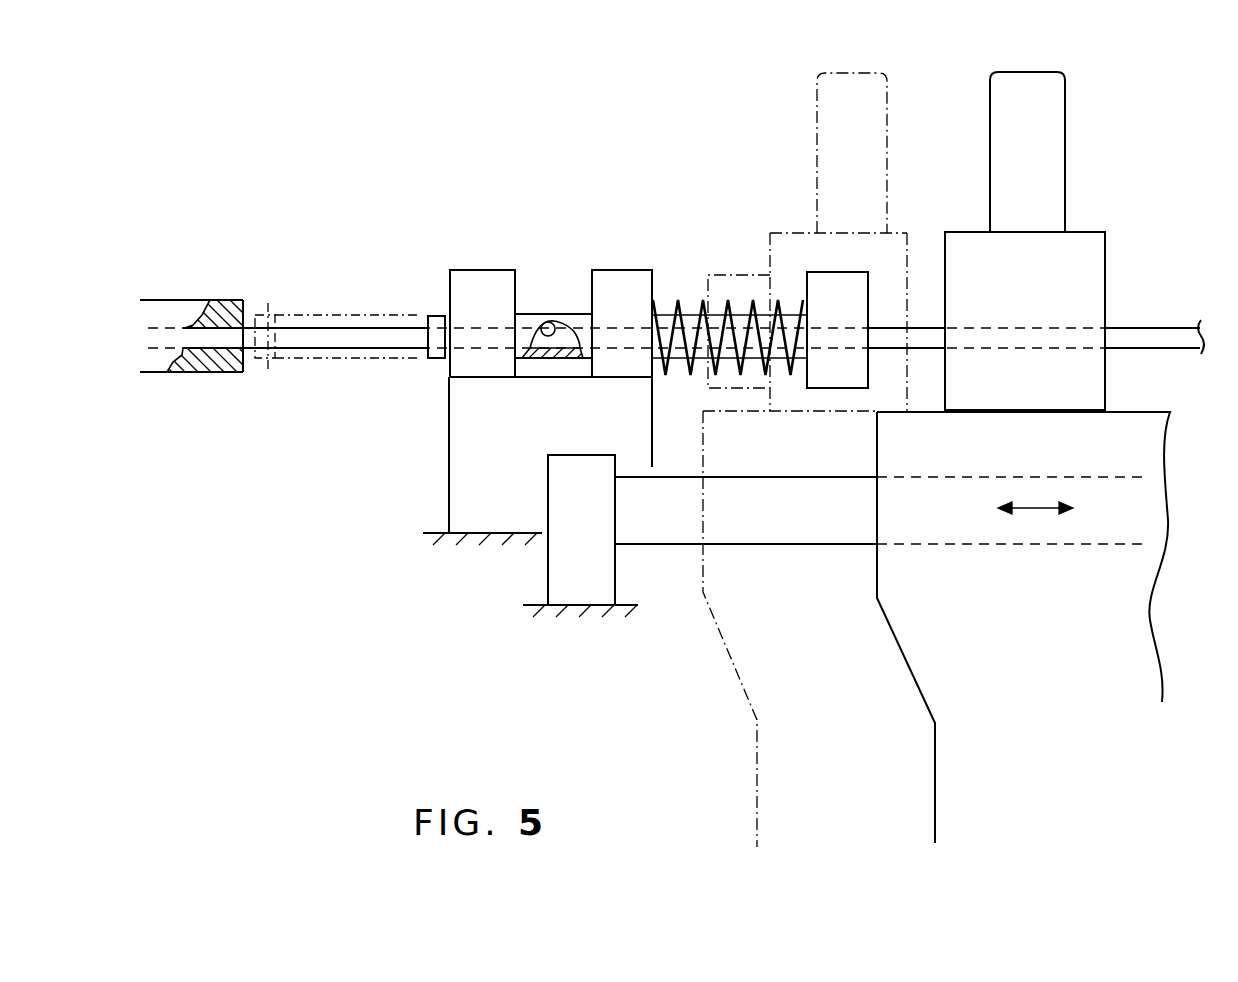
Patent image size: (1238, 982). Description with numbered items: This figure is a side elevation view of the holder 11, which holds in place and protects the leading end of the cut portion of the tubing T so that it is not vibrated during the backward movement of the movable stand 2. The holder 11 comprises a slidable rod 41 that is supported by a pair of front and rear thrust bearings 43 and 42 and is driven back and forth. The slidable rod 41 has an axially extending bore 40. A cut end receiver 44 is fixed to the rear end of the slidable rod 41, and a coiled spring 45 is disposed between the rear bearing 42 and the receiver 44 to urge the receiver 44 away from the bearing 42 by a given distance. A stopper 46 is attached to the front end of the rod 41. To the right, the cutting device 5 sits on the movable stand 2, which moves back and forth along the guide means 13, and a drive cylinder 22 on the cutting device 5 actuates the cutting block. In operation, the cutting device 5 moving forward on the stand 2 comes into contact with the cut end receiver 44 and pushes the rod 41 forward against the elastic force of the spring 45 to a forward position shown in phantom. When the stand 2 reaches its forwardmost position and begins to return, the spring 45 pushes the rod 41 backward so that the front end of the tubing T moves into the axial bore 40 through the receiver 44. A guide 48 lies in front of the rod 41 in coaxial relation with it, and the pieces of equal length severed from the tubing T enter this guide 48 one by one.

The movable stand 2 is at (918, 647).
The cutting device 5 is at (1082, 243).
The holder 11 is at (672, 195).
The guide means 13 is at (788, 530).
The drive cylinder 22 is at (1045, 110).
The axially extending bore 40 is at (555, 325).
The slidable rod 41 is at (720, 323).
The rear thrust bearing 42 is at (622, 285).
The front thrust bearing 43 is at (482, 280).
The cut end receiver 44 is at (835, 280).
The coiled spring 45 is at (698, 365).
The stopper 46 is at (442, 305).
The guide 48 is at (222, 307).
The tubing T is at (1163, 335).